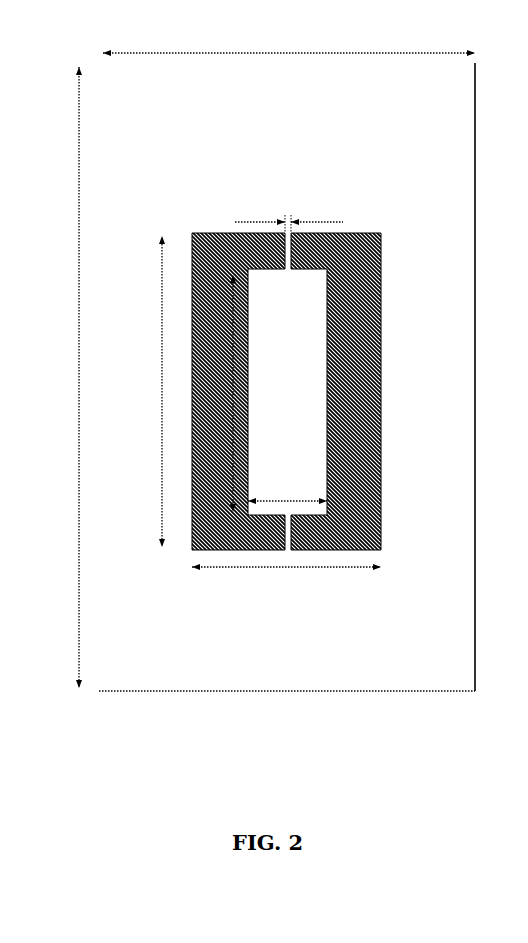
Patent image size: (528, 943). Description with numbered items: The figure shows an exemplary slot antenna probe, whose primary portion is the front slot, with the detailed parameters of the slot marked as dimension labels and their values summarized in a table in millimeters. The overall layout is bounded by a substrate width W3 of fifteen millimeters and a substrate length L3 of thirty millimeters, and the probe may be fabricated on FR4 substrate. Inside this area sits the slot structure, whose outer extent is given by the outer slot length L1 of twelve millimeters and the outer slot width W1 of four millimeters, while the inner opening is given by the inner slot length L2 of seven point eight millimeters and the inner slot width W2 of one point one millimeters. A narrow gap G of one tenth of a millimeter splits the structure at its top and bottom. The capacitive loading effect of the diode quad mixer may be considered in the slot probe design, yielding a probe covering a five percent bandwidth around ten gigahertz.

The substrate width W3 is at (289, 36).
The substrate length L3 is at (59, 377).
The gap G is at (289, 209).
The outer slot length L1 is at (149, 391).
The inner slot length L2 is at (221, 393).
The inner slot width W2 is at (287, 487).
The outer slot width W1 is at (286, 583).